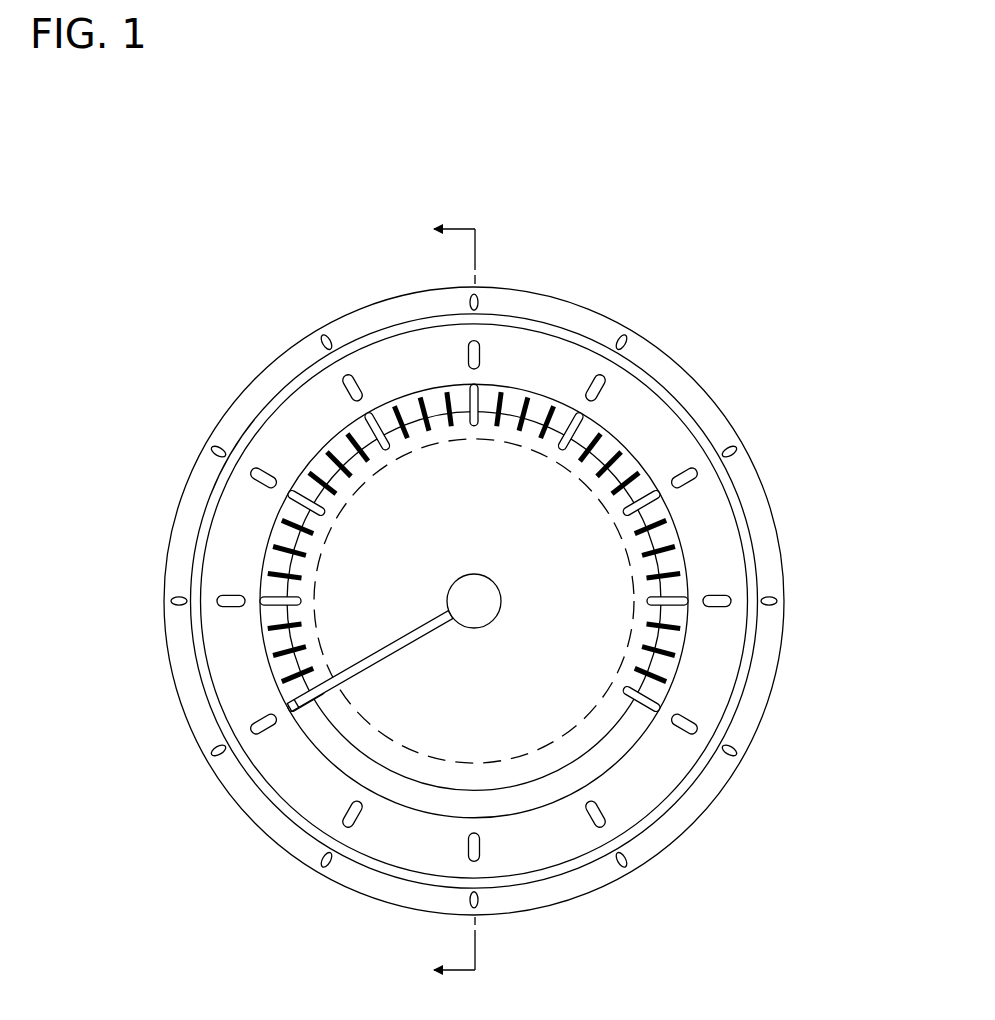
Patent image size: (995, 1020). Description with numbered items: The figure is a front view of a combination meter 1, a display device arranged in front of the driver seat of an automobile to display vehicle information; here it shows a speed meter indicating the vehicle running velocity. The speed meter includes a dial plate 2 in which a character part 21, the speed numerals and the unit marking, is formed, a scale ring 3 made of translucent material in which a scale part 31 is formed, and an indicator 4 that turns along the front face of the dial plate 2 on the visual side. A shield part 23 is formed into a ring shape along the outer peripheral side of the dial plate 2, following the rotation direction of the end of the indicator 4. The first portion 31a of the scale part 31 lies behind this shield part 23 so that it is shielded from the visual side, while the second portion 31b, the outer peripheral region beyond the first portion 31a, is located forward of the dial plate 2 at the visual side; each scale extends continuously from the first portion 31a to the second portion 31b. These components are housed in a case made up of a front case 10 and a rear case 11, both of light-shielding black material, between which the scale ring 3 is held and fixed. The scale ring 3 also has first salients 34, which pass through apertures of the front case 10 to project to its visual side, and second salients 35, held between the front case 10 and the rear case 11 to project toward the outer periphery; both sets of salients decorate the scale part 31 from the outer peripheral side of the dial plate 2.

The combination meter 1 is at (184, 295).
The dial plate 2 is at (367, 695).
The scale ring 3 is at (627, 737).
The indicator 4 is at (378, 653).
The front case 10 is at (711, 524).
The rear case 11 is at (660, 363).
The character part 21 is at (583, 690).
The shield part 23 is at (372, 735).
The scale part 31 is at (653, 702).
The first portion 31a is at (662, 636).
The second portion 31b is at (678, 648).
The first salients 34 is at (683, 472).
The second salients 35 is at (733, 450).